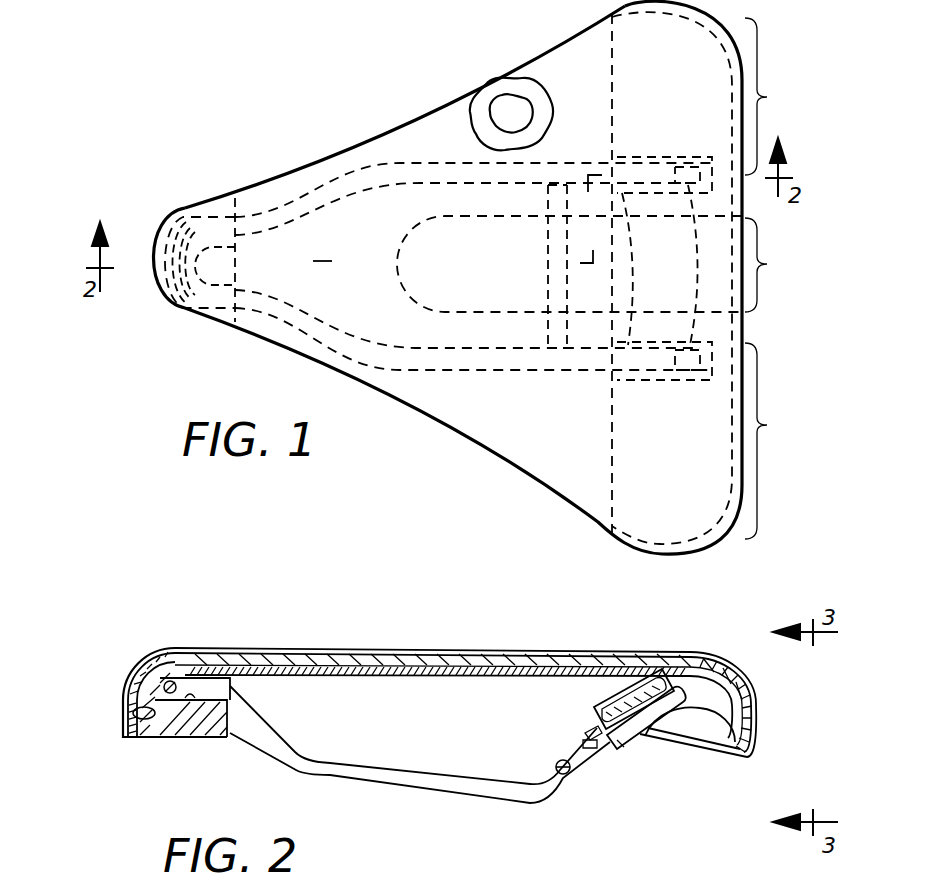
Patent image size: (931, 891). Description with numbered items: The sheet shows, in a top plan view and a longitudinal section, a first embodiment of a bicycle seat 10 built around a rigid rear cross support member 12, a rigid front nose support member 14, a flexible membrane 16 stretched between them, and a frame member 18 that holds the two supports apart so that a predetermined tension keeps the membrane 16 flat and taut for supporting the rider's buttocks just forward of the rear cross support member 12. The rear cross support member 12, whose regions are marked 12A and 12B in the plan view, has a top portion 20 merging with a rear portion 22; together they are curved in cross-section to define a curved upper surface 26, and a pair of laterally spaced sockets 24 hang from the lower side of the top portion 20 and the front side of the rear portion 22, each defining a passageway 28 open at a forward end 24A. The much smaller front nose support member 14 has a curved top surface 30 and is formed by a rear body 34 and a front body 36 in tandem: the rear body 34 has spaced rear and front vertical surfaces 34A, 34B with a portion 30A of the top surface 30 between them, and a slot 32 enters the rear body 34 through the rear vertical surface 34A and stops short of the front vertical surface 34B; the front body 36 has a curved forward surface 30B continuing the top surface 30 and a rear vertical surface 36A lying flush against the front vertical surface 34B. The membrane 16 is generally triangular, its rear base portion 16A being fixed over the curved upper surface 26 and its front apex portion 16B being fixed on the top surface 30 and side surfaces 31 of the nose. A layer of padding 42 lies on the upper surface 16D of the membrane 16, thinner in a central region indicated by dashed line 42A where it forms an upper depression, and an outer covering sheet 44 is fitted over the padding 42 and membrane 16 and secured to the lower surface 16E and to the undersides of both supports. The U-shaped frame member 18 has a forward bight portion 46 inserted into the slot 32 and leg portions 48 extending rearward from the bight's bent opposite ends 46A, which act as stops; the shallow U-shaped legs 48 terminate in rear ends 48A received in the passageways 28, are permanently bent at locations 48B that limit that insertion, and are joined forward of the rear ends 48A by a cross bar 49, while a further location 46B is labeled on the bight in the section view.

In FIG. 1, the bicycle seat 10 is at (253, 97).
In FIG. 2, the bicycle seat 10 is at (690, 620).
In FIG. 1, the rear cross support member 12 is at (606, 417).
In FIG. 2, the rear cross support member 12 is at (700, 739).
In FIG. 1, the central portion of shell 12A is at (767, 264).
In FIG. 1, the side portions of shell 12B is at (767, 97).
In FIG. 1, the front nose support member 14 is at (181, 309).
In FIG. 2, the front nose support member 14 is at (157, 745).
In FIG. 1, the flexible membrane 16 is at (507, 115).
In FIG. 2, the flexible membrane 16 is at (360, 678).
In FIG. 2, the rear base portion 16A is at (740, 687).
In FIG. 2, the front apex portion 16B is at (155, 663).
In FIG. 2, the upper surface of flexible membrane 16D is at (560, 667).
In FIG. 2, the lower surface of flexible membrane 16E is at (268, 675).
In FIG. 2, the frame member 18 is at (400, 793).
In FIG. 2, the top portion 20 is at (630, 703).
In FIG. 2, the rear portion 22 is at (740, 723).
In FIG. 1, the sockets 24 is at (636, 269).
In FIG. 2, the sockets 24 is at (615, 705).
In FIG. 2, the forward end of socket 24A is at (597, 723).
In FIG. 2, the curved upper surface 26 is at (687, 687).
In FIG. 1, the passageway 28 is at (697, 265).
In FIG. 2, the passageway 28 is at (663, 737).
In FIG. 2, the curved top surface 30 is at (167, 657).
In FIG. 2, the portion of curved top surface 30A is at (182, 650).
In FIG. 2, the curved forward surface 30B is at (127, 687).
In FIG. 1, the side surfaces 31 is at (185, 207).
In FIG. 2, the slot 32 is at (193, 693).
In FIG. 1, the rear body 34 is at (207, 207).
In FIG. 2, the rear body 34 is at (203, 727).
In FIG. 2, the rear vertical surface 34A is at (232, 738).
In FIG. 2, the front vertical surface 34B is at (150, 714).
In FIG. 1, the front body 36 is at (153, 233).
In FIG. 2, the front body 36 is at (145, 738).
In FIG. 2, the rear vertical surface of front body 36A is at (130, 722).
In FIG. 1, the layer of padding 42 is at (530, 90).
In FIG. 2, the layer of padding 42 is at (315, 655).
In FIG. 1, the upper depression 42A is at (425, 215).
In FIG. 2, the upper depression 42A is at (402, 662).
In FIG. 1, the outer covering sheet 44 is at (403, 137).
In FIG. 2, the outer covering sheet 44 is at (445, 652).
In FIG. 1, the forward bight portion 46 is at (196, 246).
In FIG. 2, the forward bight portion 46 is at (208, 692).
In FIG. 2, the opposite ends of bight portion 46A is at (225, 688).
In FIG. 2, the strap lower portion 46B is at (232, 692).
In FIG. 1, the leg portions 48 is at (535, 163).
In FIG. 2, the leg portions 48 is at (443, 783).
In FIG. 1, the rear ends of leg portions 48A is at (633, 173).
In FIG. 2, the rear ends of leg portions 48A is at (617, 747).
In FIG. 2, the bent locations 48B is at (588, 730).
In FIG. 1, the cross bar 49 is at (547, 237).
In FIG. 2, the cross bar 49 is at (563, 775).